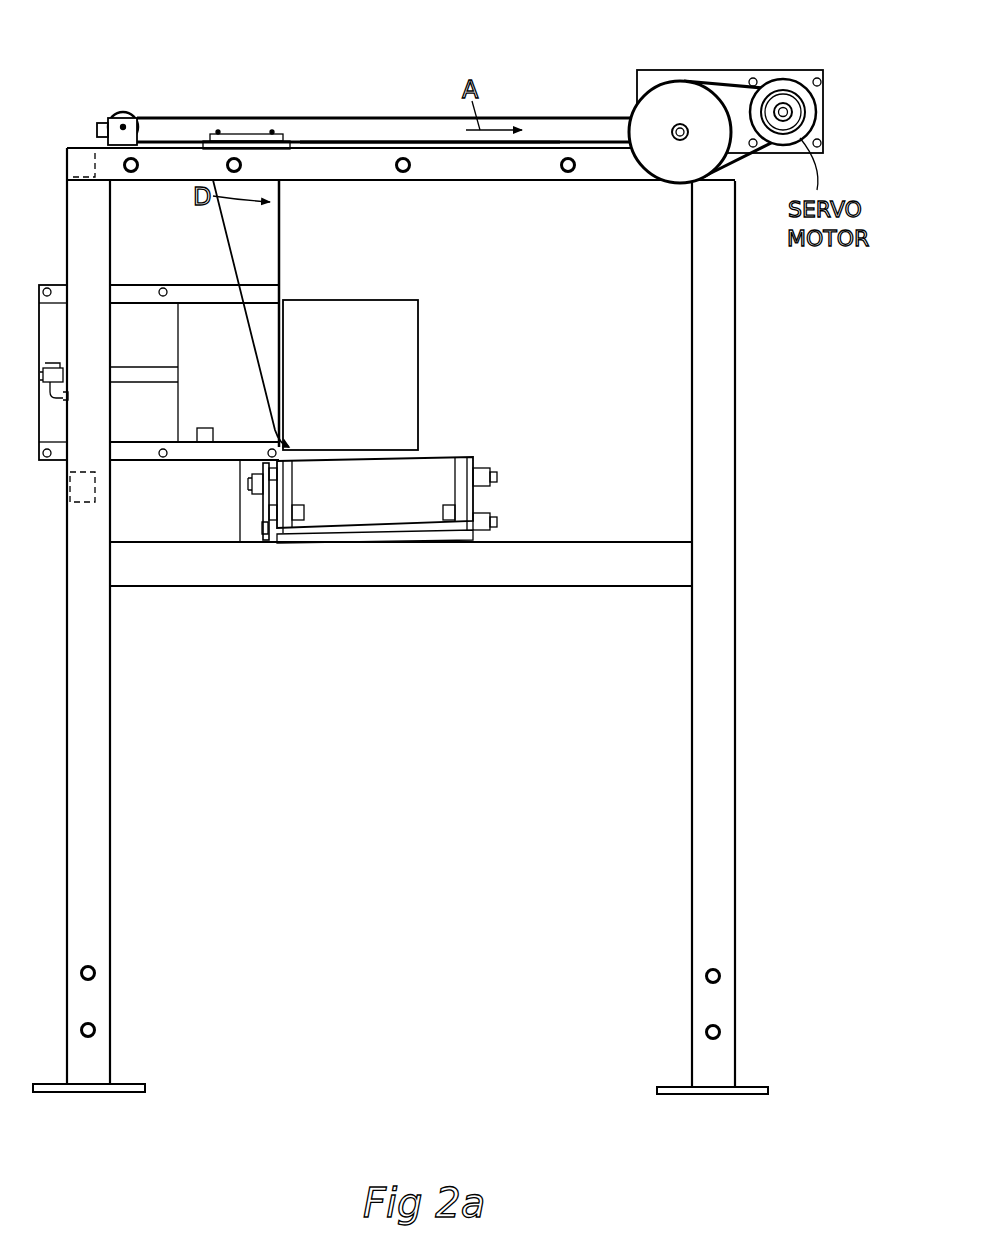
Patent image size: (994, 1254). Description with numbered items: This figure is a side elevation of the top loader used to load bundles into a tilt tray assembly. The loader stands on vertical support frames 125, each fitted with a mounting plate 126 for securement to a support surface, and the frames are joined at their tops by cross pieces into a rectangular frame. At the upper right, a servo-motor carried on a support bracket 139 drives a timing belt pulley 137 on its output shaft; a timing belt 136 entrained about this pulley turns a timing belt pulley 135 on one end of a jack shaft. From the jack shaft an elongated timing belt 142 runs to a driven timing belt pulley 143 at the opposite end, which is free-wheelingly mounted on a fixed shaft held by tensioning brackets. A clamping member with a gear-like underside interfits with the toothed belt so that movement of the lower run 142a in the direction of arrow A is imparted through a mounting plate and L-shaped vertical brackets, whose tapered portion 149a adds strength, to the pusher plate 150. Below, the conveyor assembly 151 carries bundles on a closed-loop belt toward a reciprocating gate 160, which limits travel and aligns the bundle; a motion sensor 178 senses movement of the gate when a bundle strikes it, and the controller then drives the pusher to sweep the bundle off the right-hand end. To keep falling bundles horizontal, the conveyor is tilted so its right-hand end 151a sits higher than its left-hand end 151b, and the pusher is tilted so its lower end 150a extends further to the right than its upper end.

The support frames 125 is at (100, 887).
The mounting plate 126 is at (125, 1084).
The timing belt pulley 135 is at (639, 118).
The timing belt 136 is at (742, 160).
The timing belt pulley 137 is at (790, 113).
The support bracket 139 is at (783, 70).
The timing belt 142 is at (499, 108).
The lower run 142a is at (400, 140).
The timing belt pulley 143 is at (113, 114).
The tapered portion 149a is at (223, 220).
The pusher plate 150 is at (282, 222).
The lower end 150a is at (291, 446).
The conveyor assembly 151 is at (349, 434).
The right-hand end 151a is at (437, 473).
The left-hand end 151b is at (254, 470).
The gate 160 is at (410, 325).
The motion sensor 178 is at (213, 428).